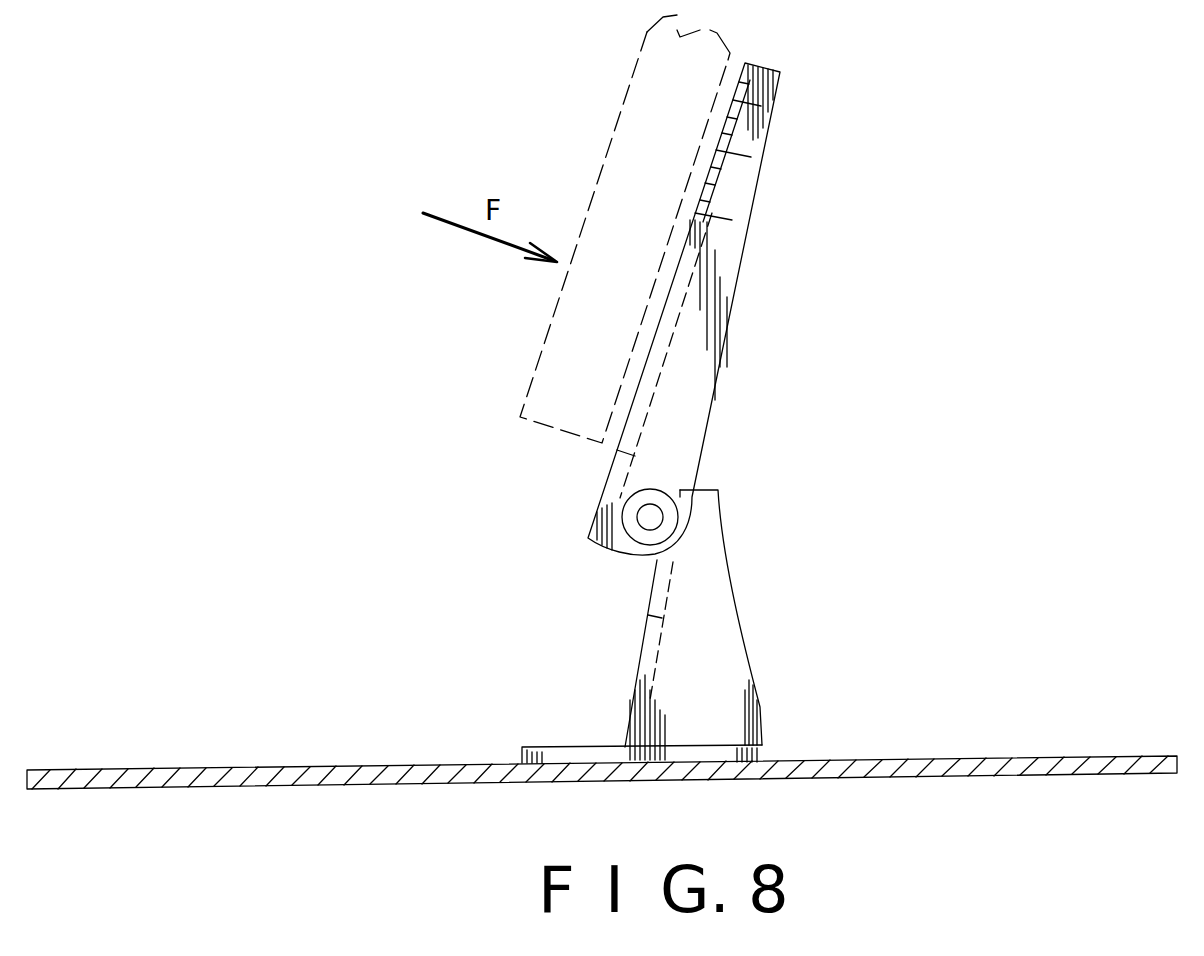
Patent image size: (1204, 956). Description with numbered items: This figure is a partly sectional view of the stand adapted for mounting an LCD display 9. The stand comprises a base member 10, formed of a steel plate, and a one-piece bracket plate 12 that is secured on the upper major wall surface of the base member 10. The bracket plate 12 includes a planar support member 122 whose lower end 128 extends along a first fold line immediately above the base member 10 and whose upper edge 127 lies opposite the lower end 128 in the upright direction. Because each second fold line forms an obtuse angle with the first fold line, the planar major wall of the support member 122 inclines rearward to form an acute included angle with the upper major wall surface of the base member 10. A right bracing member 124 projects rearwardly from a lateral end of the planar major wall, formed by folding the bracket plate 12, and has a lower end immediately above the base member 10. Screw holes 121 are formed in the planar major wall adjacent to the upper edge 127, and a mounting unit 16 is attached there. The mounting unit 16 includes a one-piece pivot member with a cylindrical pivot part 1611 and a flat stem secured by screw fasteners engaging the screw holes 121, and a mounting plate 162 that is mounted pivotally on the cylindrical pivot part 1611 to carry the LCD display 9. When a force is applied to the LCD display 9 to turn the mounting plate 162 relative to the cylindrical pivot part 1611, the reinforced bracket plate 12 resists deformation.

The LCD display 9 is at (555, 178).
The base member 10 is at (945, 768).
The bracket plate 12 is at (707, 602).
The mounting unit 16 is at (790, 216).
The screw hole 121 is at (637, 513).
The planar support member 122 is at (652, 655).
The right bracing member 124 is at (727, 693).
The upper edge 127 is at (680, 490).
The lower end 128 is at (633, 762).
The mounting plate 162 is at (728, 238).
The cylindrical pivot part 1611 is at (595, 540).